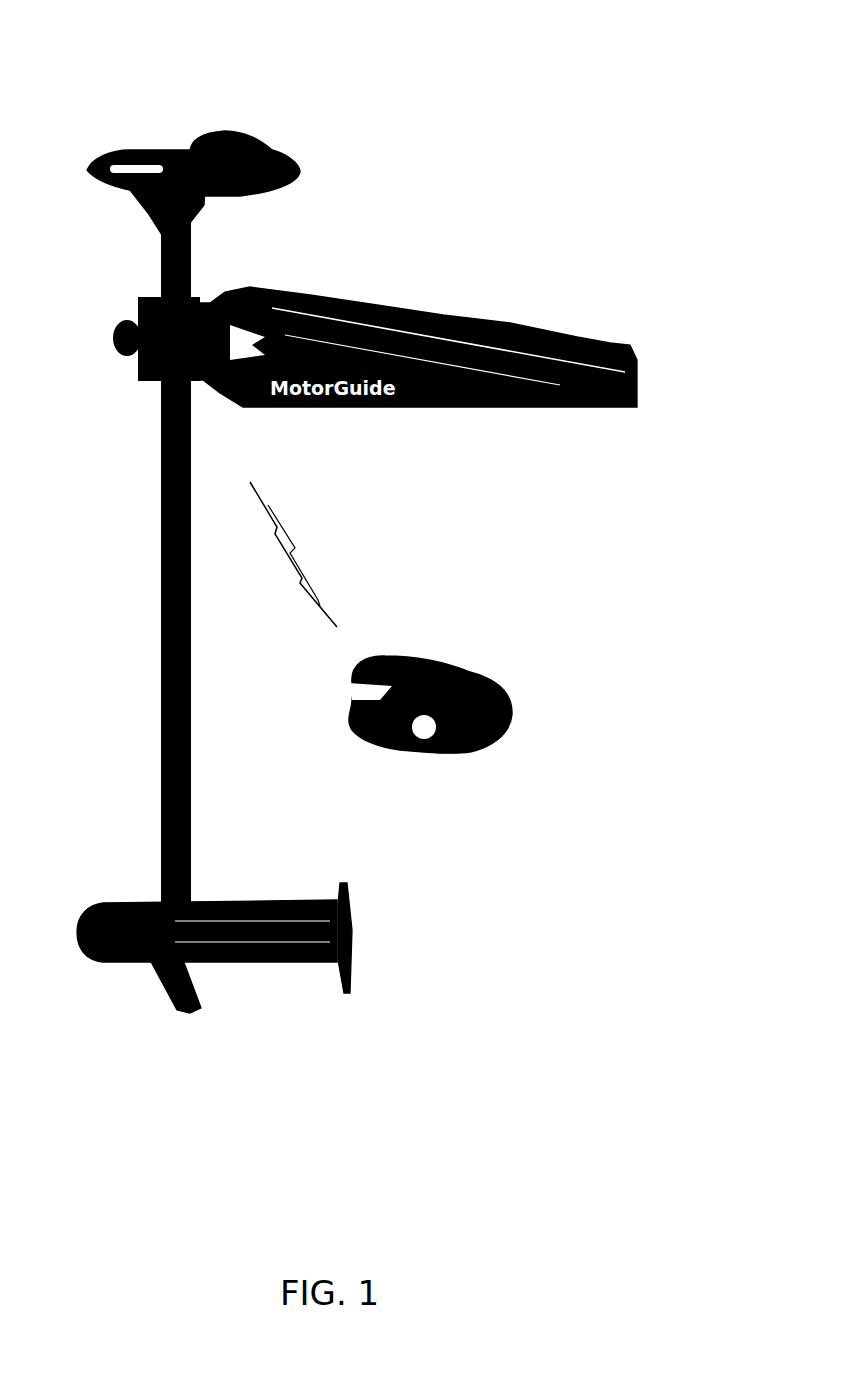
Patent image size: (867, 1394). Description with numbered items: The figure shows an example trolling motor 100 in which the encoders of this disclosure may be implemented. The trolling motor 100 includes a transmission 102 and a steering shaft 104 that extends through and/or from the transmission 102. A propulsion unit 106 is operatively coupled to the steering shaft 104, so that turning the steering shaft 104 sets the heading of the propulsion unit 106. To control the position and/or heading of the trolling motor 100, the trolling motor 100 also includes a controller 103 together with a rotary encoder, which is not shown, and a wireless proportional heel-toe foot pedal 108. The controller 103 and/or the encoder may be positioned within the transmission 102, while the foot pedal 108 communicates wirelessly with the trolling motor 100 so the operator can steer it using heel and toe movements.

The trolling motor 100 is at (601, 66).
The transmission 102 is at (262, 162).
The controller 103 is at (216, 128).
The steering shaft 104 is at (173, 621).
The propulsion unit 106 is at (347, 903).
The wireless proportional heel-toe foot pedal 108 is at (473, 681).